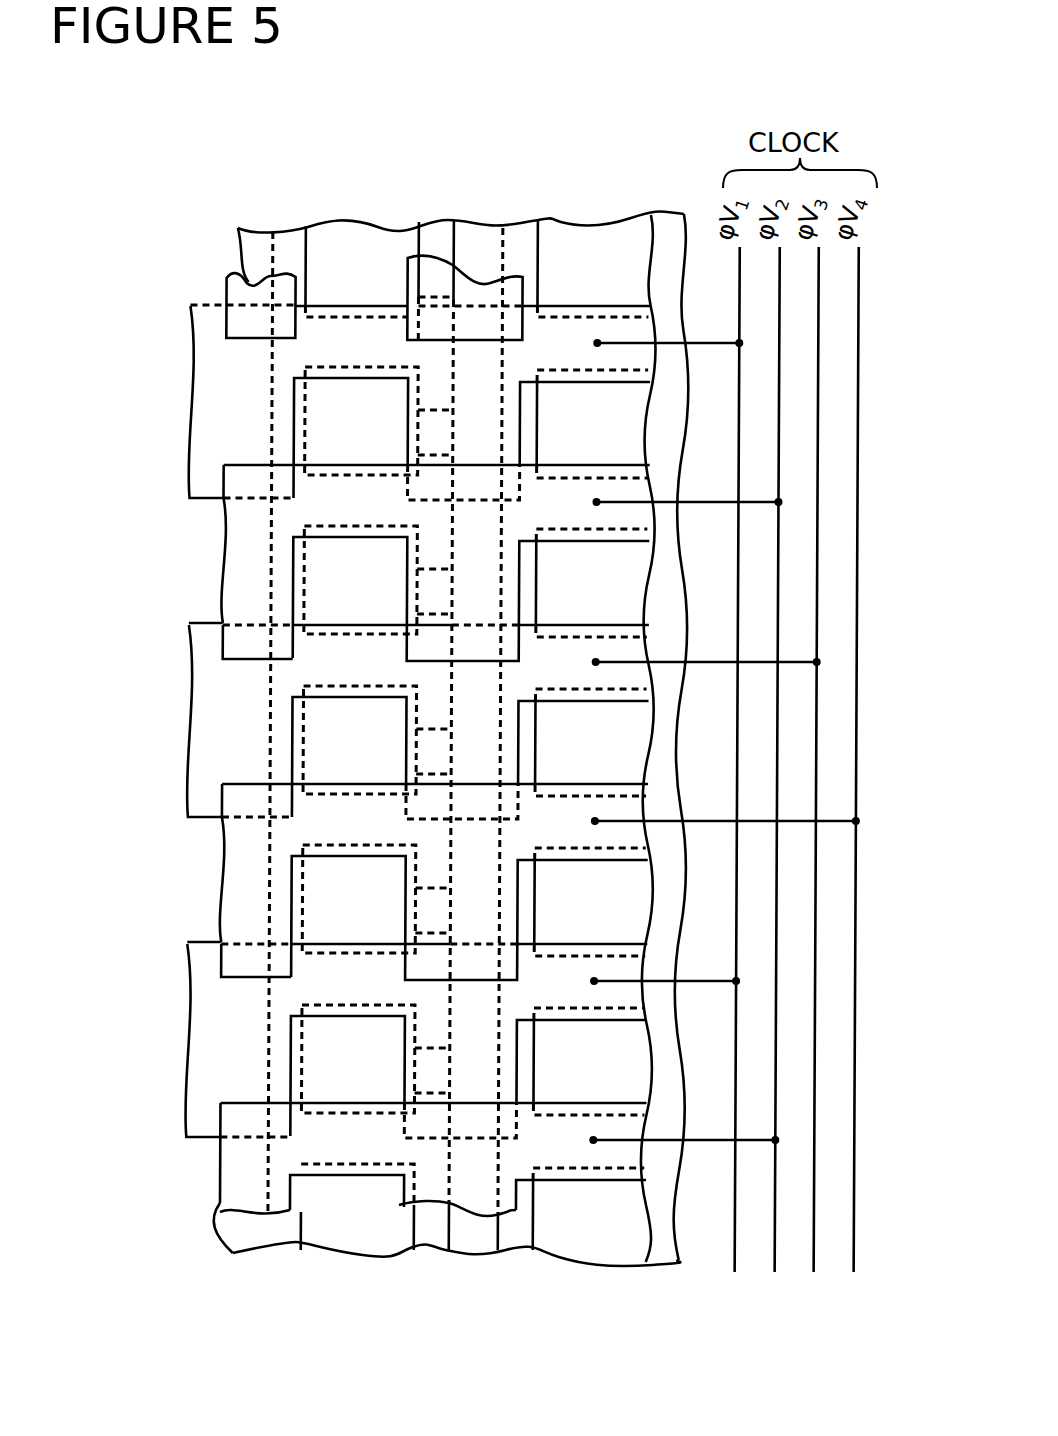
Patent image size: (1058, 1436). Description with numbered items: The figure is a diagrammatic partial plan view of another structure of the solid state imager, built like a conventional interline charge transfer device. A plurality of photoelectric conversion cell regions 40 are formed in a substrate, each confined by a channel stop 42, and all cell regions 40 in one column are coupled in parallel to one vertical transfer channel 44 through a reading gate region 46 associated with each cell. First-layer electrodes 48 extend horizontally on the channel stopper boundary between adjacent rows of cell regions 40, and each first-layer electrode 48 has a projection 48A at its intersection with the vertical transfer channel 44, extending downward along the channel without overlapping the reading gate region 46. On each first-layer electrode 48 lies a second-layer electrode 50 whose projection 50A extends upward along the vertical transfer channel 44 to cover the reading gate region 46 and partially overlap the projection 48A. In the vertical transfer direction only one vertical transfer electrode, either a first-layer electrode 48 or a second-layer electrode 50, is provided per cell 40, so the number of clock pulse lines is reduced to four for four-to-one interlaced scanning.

The photoelectric conversion cell region 40 is at (317, 1043).
The channel stop 42 is at (638, 178).
The vertical transfer channel 44 is at (483, 1245).
The reading gate region 46 is at (458, 275).
The first-layer electrode 48 is at (225, 345).
The projection of the first-layer electrode 48A is at (227, 450).
The second-layer electrode 50 is at (222, 288).
The projection of the second-layer electrode 50A is at (227, 610).